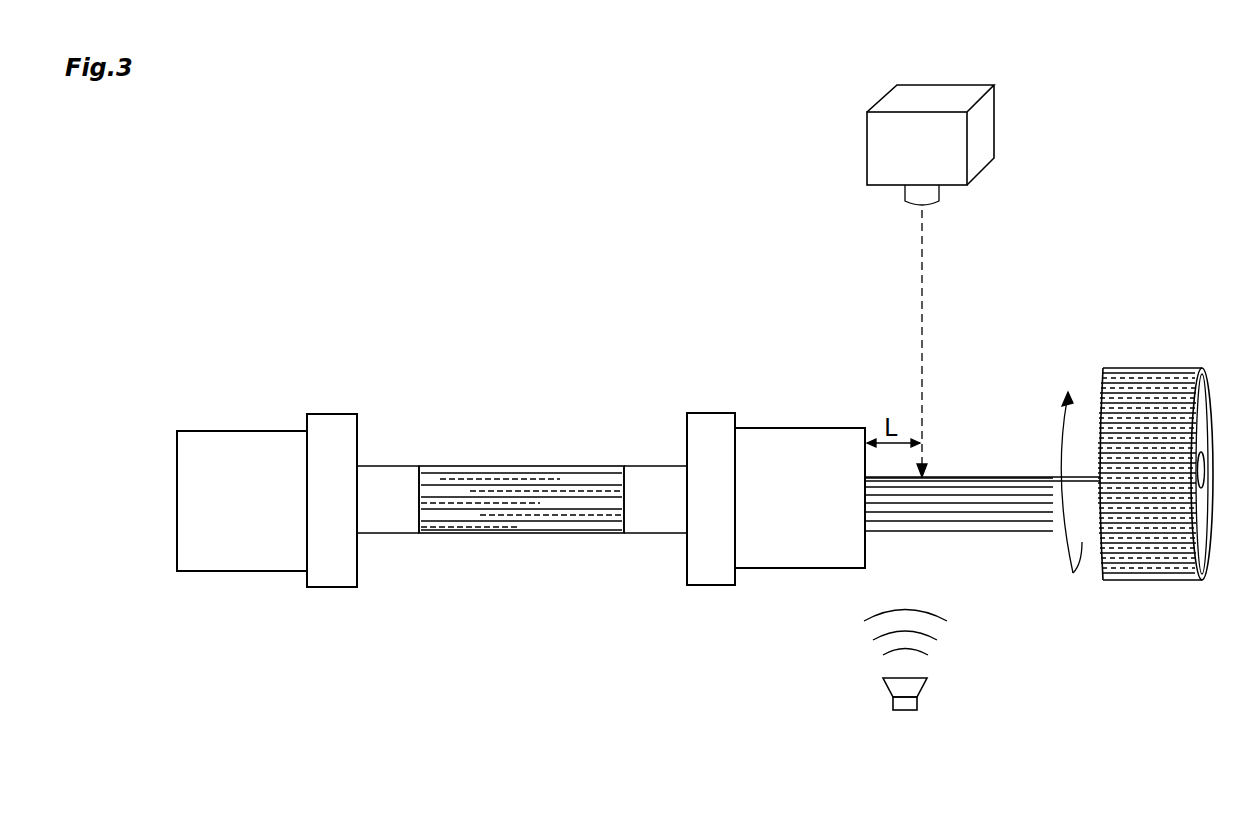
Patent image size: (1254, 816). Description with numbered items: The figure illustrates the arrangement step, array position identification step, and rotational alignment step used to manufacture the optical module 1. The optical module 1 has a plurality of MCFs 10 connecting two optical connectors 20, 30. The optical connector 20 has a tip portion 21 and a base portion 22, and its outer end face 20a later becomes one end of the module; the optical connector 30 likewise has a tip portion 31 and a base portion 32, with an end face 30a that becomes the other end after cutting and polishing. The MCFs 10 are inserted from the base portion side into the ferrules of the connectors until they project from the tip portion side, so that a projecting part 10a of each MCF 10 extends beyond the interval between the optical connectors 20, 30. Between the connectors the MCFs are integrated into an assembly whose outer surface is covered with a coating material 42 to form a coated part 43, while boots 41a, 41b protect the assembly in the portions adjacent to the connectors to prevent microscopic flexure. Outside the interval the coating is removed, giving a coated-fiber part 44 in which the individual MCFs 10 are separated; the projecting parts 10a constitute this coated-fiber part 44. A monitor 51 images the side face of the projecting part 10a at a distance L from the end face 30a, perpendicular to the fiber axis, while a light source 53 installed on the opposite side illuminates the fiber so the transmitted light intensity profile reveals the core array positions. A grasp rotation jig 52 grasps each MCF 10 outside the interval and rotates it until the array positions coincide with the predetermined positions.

The optical module 1 is at (403, 341).
The MCF 10 is at (512, 465).
The projecting part 10a is at (995, 478).
The optical connector 20 is at (267, 548).
The end face 20a is at (177, 472).
The tip portion 21 is at (241, 572).
The base portion 22 is at (332, 531).
The optical connector 30 is at (775, 548).
The end face 30a is at (866, 551).
The tip portion 31 is at (800, 537).
The base portion 32 is at (708, 587).
The boot 41a is at (392, 465).
The boot 41b is at (640, 465).
The coating material 42 is at (475, 534).
The coated part 43 is at (564, 534).
The coated-fiber part 44 is at (1035, 531).
The monitor 51 is at (994, 125).
The grasp rotation jig 52 is at (1152, 367).
The light source 53 is at (910, 712).